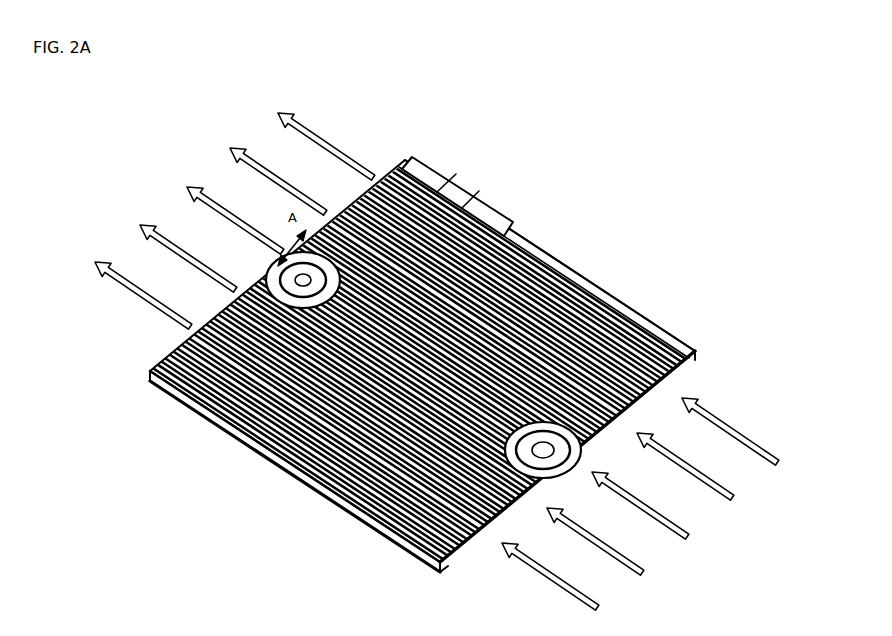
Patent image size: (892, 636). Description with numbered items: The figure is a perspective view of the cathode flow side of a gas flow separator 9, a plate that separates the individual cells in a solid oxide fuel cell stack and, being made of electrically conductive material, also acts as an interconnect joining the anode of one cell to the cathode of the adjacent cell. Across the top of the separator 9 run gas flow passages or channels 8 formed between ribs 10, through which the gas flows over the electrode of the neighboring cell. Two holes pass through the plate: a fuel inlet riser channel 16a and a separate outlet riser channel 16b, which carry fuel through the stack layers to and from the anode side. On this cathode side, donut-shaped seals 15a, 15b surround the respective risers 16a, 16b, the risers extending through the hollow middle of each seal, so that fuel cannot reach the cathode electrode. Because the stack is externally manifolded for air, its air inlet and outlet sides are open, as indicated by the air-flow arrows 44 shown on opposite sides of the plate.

The air-flow arrows 44 is at (343, 153).
The gas flow separator 9 is at (403, 161).
The gas flow passages or channels 8 is at (479, 191).
The ribs 10 is at (547, 259).
The riser channel 16a is at (290, 273).
The outlet riser channel 16b is at (546, 445).
The seal 15a is at (278, 276).
The seal 15b is at (583, 448).